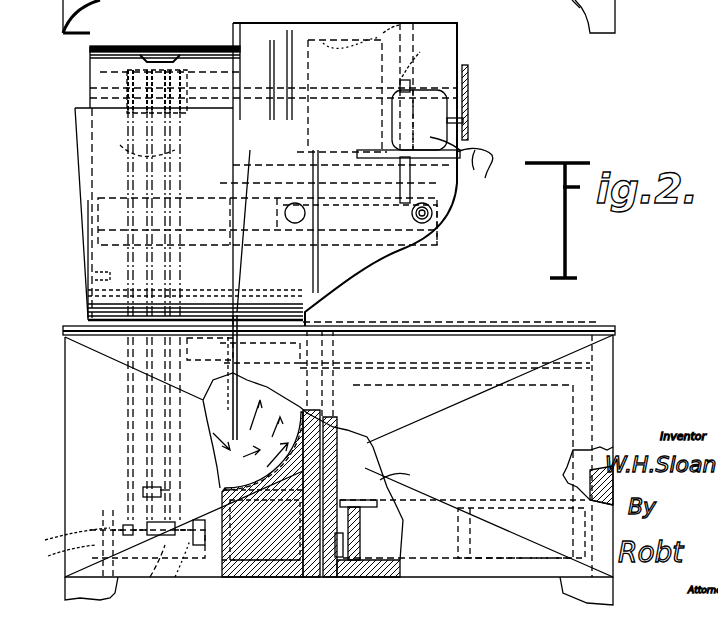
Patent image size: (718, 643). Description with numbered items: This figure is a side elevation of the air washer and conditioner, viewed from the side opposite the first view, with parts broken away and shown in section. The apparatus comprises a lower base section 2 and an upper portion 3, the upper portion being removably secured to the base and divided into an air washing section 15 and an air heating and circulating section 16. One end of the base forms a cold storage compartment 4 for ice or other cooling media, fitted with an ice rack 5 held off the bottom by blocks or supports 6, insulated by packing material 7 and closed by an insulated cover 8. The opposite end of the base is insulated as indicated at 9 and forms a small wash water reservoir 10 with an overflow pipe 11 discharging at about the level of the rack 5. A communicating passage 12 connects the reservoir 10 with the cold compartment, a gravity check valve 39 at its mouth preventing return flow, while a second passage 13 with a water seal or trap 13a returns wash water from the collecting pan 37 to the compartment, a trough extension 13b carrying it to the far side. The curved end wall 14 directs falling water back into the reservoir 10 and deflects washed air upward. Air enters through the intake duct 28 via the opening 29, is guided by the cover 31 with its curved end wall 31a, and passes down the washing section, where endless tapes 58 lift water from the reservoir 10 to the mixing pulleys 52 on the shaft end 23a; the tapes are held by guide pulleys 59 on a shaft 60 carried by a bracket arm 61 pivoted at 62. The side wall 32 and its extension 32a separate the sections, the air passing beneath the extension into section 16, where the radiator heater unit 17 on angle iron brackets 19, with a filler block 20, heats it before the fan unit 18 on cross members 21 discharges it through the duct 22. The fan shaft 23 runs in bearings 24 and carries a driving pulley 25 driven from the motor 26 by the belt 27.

The lower base section 2 is at (95, 397).
The upper portion 3 is at (78, 240).
The cold storage compartment 4 is at (583, 418).
The ice rack 5 is at (395, 474).
The blocks or supports 6 is at (362, 543).
The packing material 7 is at (590, 455).
The cover 8 is at (480, 326).
The insulation 9 is at (70, 458).
The wash water reservoir 10 is at (64, 538).
The overflow pipe 11 is at (58, 555).
The communicating passage 12 is at (265, 577).
The communicating passage 13 is at (195, 308).
The water seal or trap 13a is at (315, 325).
The trough extension 13b is at (400, 362).
The end wall 14 is at (303, 453).
The air washing section 15 is at (95, 155).
The air heating and circulating section 16 is at (380, 253).
The radiator heater unit 17 is at (345, 235).
The impeller fan or blower unit 18 is at (405, 19).
The angle iron brackets 19 is at (295, 240).
The filler block 20 is at (258, 240).
The cross members 21 is at (240, 185).
The discharge duct 22 is at (358, 24).
The shaft 23 is at (345, 98).
The shaft end 23a is at (232, 112).
The bearings 24 is at (373, 55).
The driving pulley 25 is at (420, 108).
The motor 26 is at (468, 68).
The driving belt 27 is at (468, 108).
The air intake duct 28 is at (80, 208).
The opening 29 is at (95, 278).
The cover 31 is at (150, 52).
The curved end wall 31a is at (100, 72).
The side wall 32 is at (238, 205).
The extension 32a is at (245, 395).
The collecting pan 37 is at (218, 360).
The check valve 39 is at (177, 570).
The mixing pulleys 52 is at (183, 80).
The endless ribbon members or tapes 58 is at (125, 146).
The guide pulleys 59 is at (135, 510).
The shaft 60 is at (146, 572).
The bracket arm 61 is at (170, 490).
The pivot 62 is at (143, 490).